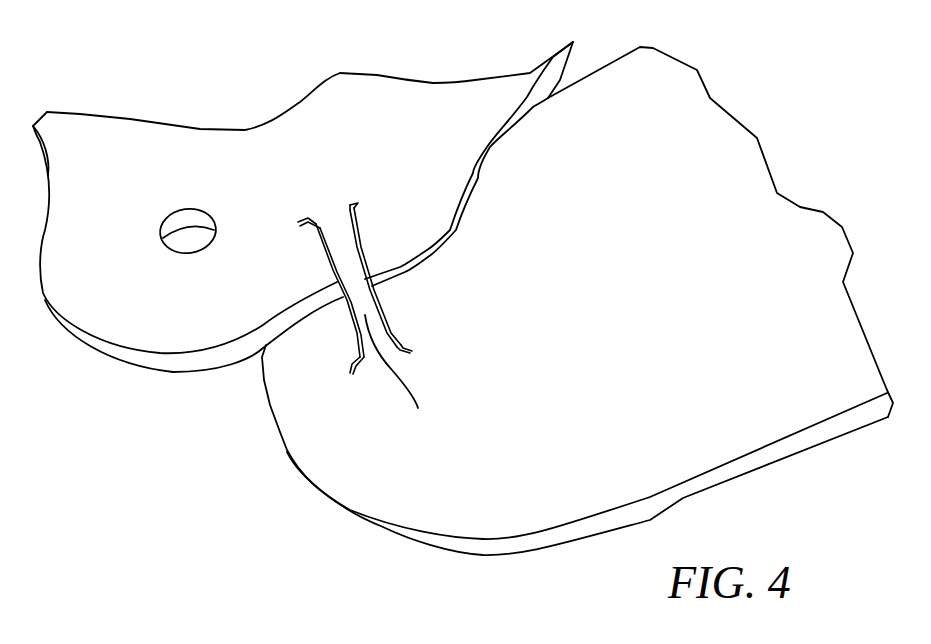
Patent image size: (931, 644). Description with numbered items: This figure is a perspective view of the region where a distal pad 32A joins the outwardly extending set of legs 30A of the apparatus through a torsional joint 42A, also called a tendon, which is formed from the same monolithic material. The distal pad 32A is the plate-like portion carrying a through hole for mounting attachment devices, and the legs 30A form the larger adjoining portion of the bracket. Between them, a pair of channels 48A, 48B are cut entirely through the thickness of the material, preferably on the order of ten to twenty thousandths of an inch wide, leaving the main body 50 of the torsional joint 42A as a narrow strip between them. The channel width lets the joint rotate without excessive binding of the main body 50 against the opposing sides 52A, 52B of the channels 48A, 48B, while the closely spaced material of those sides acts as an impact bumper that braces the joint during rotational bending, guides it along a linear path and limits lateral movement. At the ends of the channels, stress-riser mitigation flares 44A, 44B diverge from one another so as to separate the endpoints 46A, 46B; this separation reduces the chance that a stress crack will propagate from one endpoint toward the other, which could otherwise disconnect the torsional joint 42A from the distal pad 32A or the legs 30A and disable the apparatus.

The outwardly extending set of legs 30A is at (473, 468).
The distal pad 32A is at (100, 140).
The main body of the torsional joint 50 is at (343, 247).
The torsional joint 42A is at (404, 376).
The stress-riser mitigation flare 44A is at (313, 234).
The stress-riser mitigation flare 44B is at (360, 213).
The endpoint 46A is at (303, 220).
The endpoint 46B is at (357, 203).
The channel 48A is at (340, 287).
The channel 48B is at (373, 308).
The opposing side of the channel 52A is at (340, 255).
The opposing side of the channel 52B is at (363, 245).